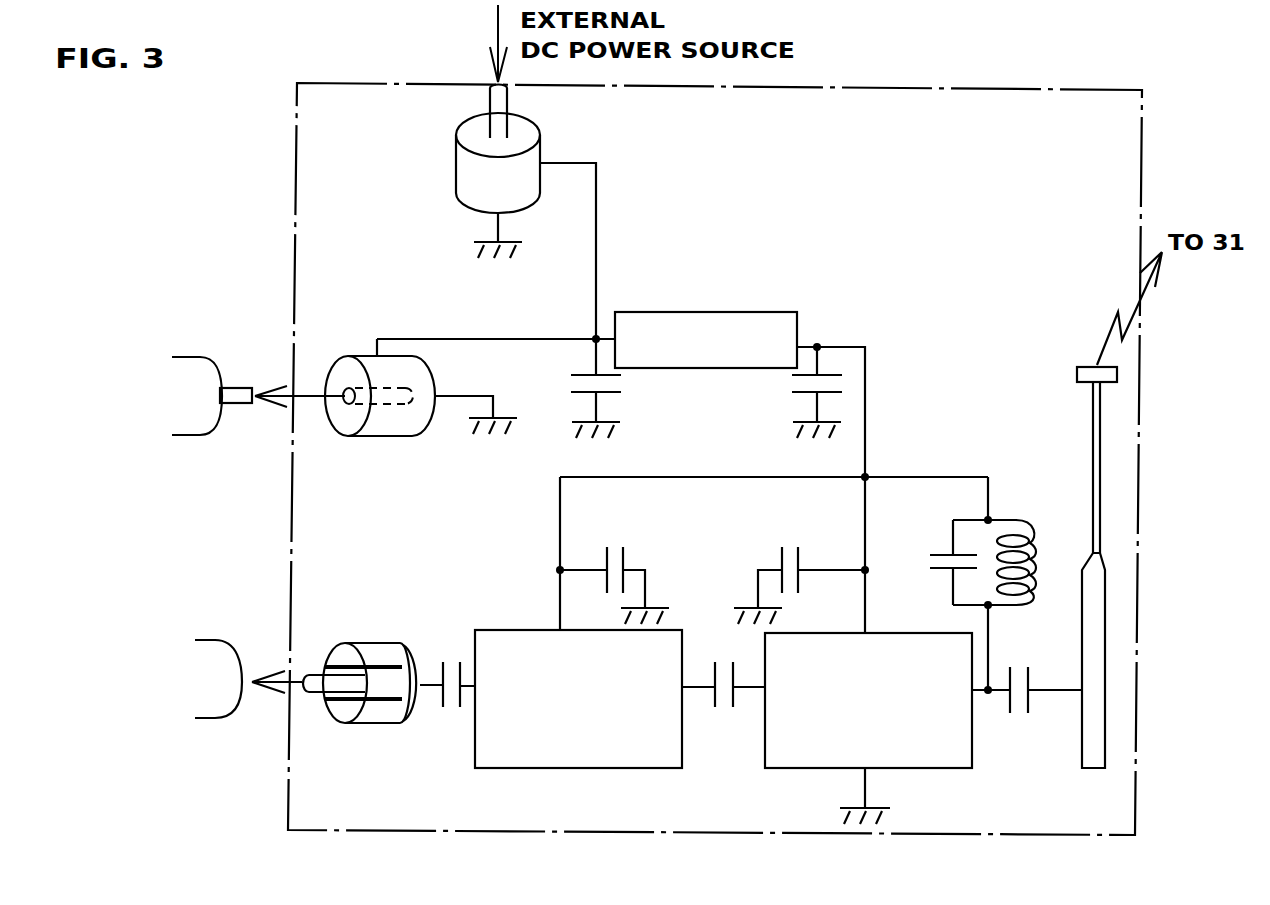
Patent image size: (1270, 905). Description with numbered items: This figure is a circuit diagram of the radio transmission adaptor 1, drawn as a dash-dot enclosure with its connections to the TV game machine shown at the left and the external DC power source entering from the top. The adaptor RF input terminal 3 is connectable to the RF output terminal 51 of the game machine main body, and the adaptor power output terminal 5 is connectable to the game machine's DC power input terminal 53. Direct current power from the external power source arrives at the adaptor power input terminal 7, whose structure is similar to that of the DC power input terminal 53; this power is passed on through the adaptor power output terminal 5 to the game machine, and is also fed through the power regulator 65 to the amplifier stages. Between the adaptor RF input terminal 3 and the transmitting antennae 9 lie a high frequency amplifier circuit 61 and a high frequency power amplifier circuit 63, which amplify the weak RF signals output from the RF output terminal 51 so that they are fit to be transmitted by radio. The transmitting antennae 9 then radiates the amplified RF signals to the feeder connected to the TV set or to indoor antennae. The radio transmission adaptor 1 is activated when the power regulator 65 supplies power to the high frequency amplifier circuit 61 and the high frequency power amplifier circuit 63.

The radio transmission adaptor 1 is at (1030, 85).
The adaptor RF input terminal 3 is at (368, 644).
The adaptor power output terminal 5 is at (374, 362).
The adaptor power input terminal 7 is at (477, 174).
The transmitting antennae 9 is at (1090, 587).
The RF output terminal 51 is at (215, 655).
The DC power input terminal 53 is at (203, 379).
The high frequency amplifier circuit 61 is at (657, 768).
The high frequency power amplifier circuit 63 is at (785, 768).
The power regulator 65 is at (650, 312).